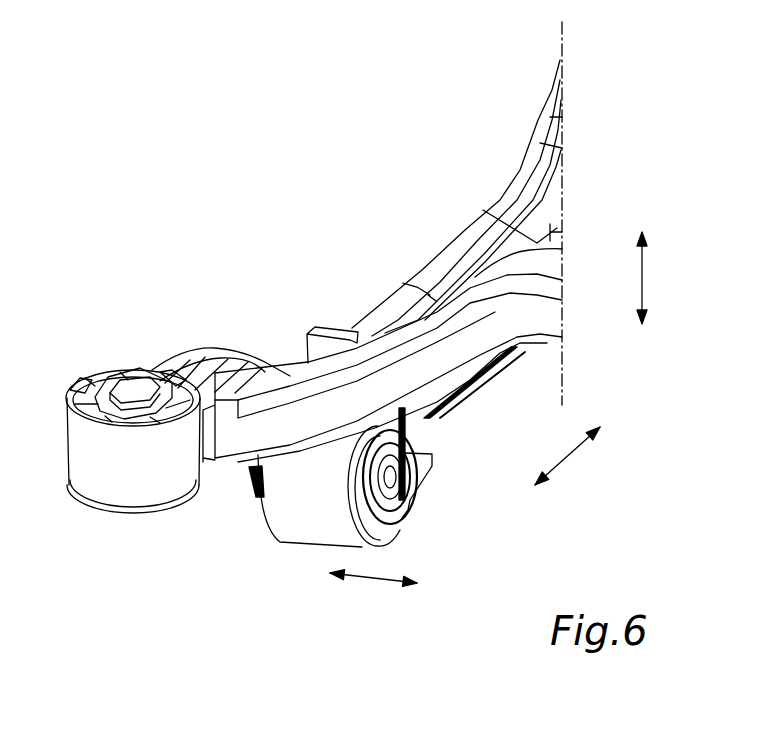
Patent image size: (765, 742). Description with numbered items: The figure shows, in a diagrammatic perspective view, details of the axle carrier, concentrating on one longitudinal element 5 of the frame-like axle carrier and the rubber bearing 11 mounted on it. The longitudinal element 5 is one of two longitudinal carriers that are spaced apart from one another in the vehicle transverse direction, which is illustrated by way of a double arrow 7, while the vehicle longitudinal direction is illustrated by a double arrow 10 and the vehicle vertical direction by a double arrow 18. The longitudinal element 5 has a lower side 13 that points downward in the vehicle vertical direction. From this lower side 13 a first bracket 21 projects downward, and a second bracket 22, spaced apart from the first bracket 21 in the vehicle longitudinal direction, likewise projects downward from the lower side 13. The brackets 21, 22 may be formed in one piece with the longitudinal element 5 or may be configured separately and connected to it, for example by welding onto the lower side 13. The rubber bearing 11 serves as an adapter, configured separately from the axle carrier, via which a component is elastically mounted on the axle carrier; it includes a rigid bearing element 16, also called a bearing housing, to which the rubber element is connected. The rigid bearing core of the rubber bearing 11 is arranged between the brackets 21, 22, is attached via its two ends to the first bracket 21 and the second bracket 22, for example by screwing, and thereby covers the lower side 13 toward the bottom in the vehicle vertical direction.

The longitudinal element 5 is at (548, 267).
The double arrow 18 is at (644, 284).
The lower side 13 is at (551, 342).
The double arrow 7 is at (568, 456).
The second bracket 22 is at (412, 445).
The rubber bearing 11 is at (417, 498).
The bearing element 16 is at (293, 517).
The first bracket 21 is at (250, 482).
The double arrow 10 is at (370, 578).